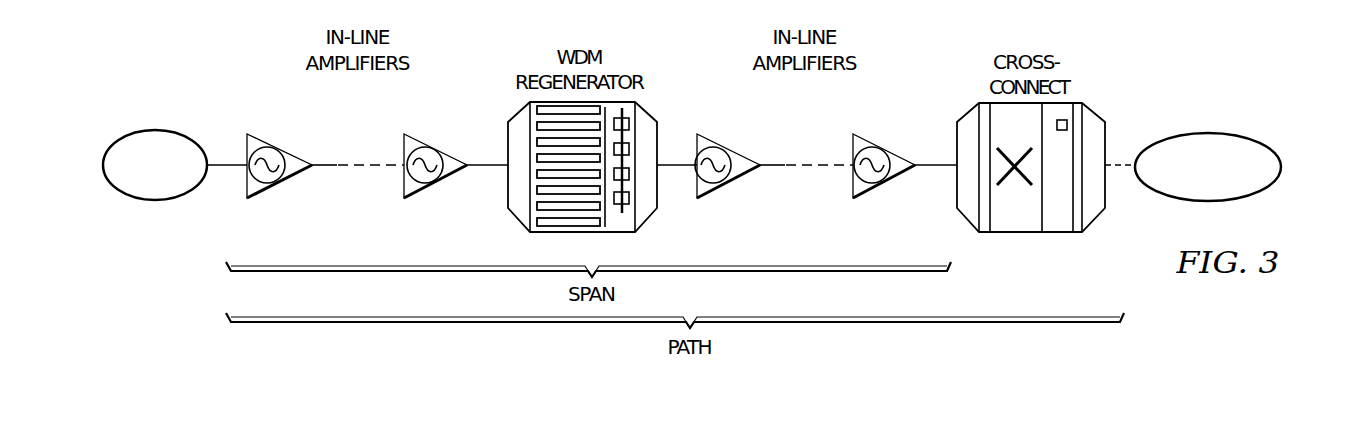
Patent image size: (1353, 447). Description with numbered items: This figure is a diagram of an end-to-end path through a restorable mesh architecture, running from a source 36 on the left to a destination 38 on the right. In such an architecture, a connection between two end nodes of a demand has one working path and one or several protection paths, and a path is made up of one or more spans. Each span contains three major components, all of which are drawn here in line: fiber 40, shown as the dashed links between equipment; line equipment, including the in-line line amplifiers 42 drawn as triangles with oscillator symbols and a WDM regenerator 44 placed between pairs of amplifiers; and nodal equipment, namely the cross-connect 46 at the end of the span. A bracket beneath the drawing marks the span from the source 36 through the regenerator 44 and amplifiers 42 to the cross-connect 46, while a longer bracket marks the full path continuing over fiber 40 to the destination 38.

The source 36 is at (142, 130).
The destination 38 is at (1215, 133).
The fiber 40 is at (392, 166).
The line amplifiers 42 is at (265, 135).
The regenerators 44 is at (517, 218).
The cross-connects 46 is at (1057, 233).